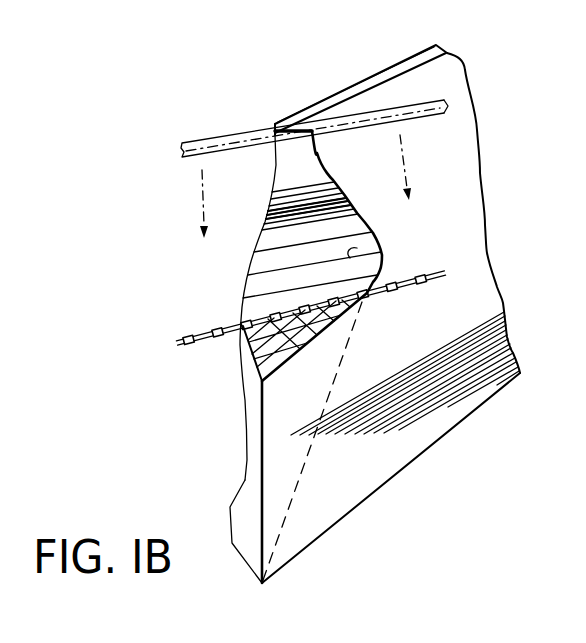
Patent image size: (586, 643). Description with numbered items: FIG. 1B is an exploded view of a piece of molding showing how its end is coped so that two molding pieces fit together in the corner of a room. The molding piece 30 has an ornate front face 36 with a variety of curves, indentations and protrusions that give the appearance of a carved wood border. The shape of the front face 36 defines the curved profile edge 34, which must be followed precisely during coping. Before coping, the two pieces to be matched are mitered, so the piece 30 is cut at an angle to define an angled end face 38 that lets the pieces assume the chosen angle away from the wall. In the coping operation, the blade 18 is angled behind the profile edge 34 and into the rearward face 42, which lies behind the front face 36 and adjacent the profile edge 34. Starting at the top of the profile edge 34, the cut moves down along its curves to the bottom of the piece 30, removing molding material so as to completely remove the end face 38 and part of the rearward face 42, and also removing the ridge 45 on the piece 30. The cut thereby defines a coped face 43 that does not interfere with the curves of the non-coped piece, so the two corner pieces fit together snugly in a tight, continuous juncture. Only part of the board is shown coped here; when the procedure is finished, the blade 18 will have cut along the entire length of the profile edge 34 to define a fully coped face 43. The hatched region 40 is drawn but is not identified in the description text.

The blade 18 is at (264, 92).
The molding piece 30 is at (352, 73).
The curved profile edge 34 is at (271, 212).
The ornate front face 36 is at (303, 118).
The angled end face 38 is at (245, 492).
The cross-hatched triangular cutting region 40 is at (304, 367).
The rearward face 42 is at (321, 436).
The coped face 43 is at (350, 258).
The ridge 45 is at (264, 532).